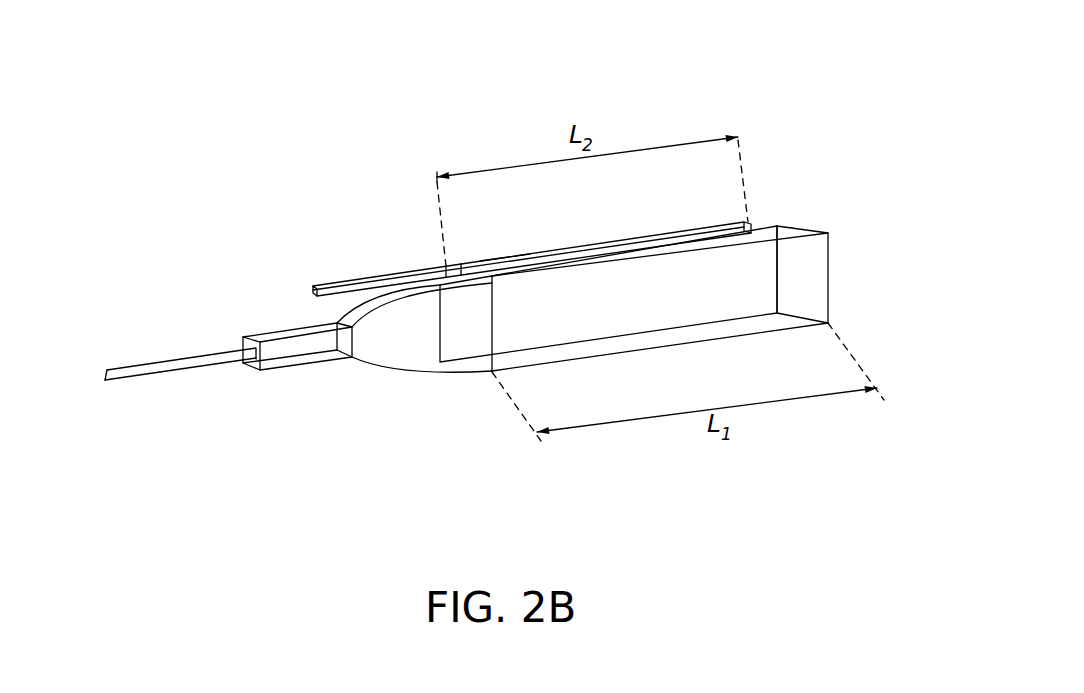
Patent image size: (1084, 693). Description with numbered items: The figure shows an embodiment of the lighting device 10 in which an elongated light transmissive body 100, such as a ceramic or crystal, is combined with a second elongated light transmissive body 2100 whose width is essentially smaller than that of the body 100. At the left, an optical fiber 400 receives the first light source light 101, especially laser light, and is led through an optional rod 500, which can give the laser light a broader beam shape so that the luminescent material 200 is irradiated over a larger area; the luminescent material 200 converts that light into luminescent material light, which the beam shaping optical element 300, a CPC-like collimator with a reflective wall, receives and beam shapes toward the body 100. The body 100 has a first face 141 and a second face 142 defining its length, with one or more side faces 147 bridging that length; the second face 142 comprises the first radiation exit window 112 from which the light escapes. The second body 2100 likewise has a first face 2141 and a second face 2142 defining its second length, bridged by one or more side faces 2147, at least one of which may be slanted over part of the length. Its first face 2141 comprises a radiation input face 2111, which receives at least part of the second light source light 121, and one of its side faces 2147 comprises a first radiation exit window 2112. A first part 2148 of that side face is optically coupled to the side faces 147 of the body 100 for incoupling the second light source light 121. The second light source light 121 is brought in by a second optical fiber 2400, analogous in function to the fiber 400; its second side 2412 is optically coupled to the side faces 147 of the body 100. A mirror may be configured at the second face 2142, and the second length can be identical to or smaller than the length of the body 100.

The lighting device 10 is at (172, 92).
The elongated light transmissive body 100 is at (632, 190).
The second elongated light transmissive body 2100 is at (658, 243).
The second optical fiber 2400 is at (338, 285).
The beam shaping optical element 300 is at (400, 323).
The optical fiber 400 is at (165, 320).
The first light source light 101 is at (43, 383).
The second light source light 121 is at (306, 295).
The rod 500 is at (293, 388).
The luminescent material 200 is at (343, 353).
The first face 141 is at (467, 342).
The side faces 147 is at (797, 228).
The second face 142 is at (857, 232).
The first radiation exit window 112 is at (860, 238).
The side faces of the second elongated light transmissive body 2147 is at (505, 258).
The first part of the side face of the second elongated light transmissive body 2148 is at (583, 375).
The first face of the second elongated light transmissive body 2141 is at (460, 266).
The radiation input face of the second elongated light transmissive body 2111 is at (453, 270).
The second side of the second optical fiber 2412 is at (453, 270).
The second face of the second elongated light transmissive body 2142 is at (758, 222).
The first radiation exit window of the second elongated light transmissive body 2112 is at (747, 227).